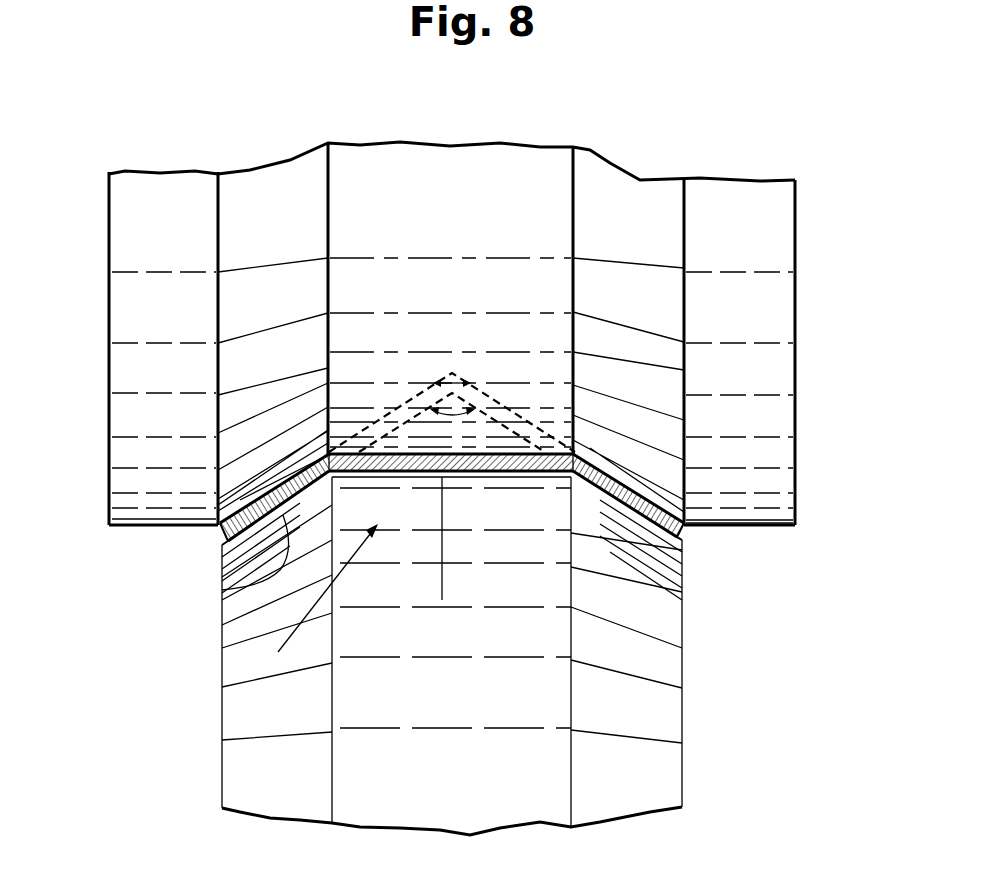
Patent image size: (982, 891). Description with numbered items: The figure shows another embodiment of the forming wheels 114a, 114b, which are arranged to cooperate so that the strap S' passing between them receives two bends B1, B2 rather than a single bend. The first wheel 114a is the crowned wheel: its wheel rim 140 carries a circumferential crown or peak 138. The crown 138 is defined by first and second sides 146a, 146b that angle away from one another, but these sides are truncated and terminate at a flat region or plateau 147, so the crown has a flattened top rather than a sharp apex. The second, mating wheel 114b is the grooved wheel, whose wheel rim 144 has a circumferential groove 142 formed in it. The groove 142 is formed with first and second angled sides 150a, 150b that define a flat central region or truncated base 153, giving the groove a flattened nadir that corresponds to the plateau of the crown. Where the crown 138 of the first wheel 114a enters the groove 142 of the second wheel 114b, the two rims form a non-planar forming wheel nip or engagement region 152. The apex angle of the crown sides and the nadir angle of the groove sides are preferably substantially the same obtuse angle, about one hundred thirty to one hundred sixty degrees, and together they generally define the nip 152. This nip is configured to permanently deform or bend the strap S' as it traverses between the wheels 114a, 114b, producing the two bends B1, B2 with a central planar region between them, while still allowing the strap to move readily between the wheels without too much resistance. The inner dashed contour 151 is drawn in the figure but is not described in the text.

The first forming wheel 114a is at (683, 730).
The second forming wheel 114b is at (796, 312).
The circumferential crown or peak 138 is at (335, 585).
The wheel rim 140 is at (221, 540).
The circumferential groove 142 is at (575, 448).
The wheel rim 144 is at (744, 526).
The first side of crown 146a is at (222, 610).
The second side of crown 146b is at (633, 540).
The flat region or plateau 147 is at (442, 477).
The first side of groove 150a is at (290, 494).
The second side of groove 150b is at (632, 485).
The inner notch contour (dashed) 151 is at (463, 403).
The forming wheel nip or engagement region 152 is at (698, 547).
The flat central region or truncated base 153 is at (407, 448).
The first bend B1 is at (575, 451).
The second bend B2 is at (328, 453).
The strap S' is at (736, 548).